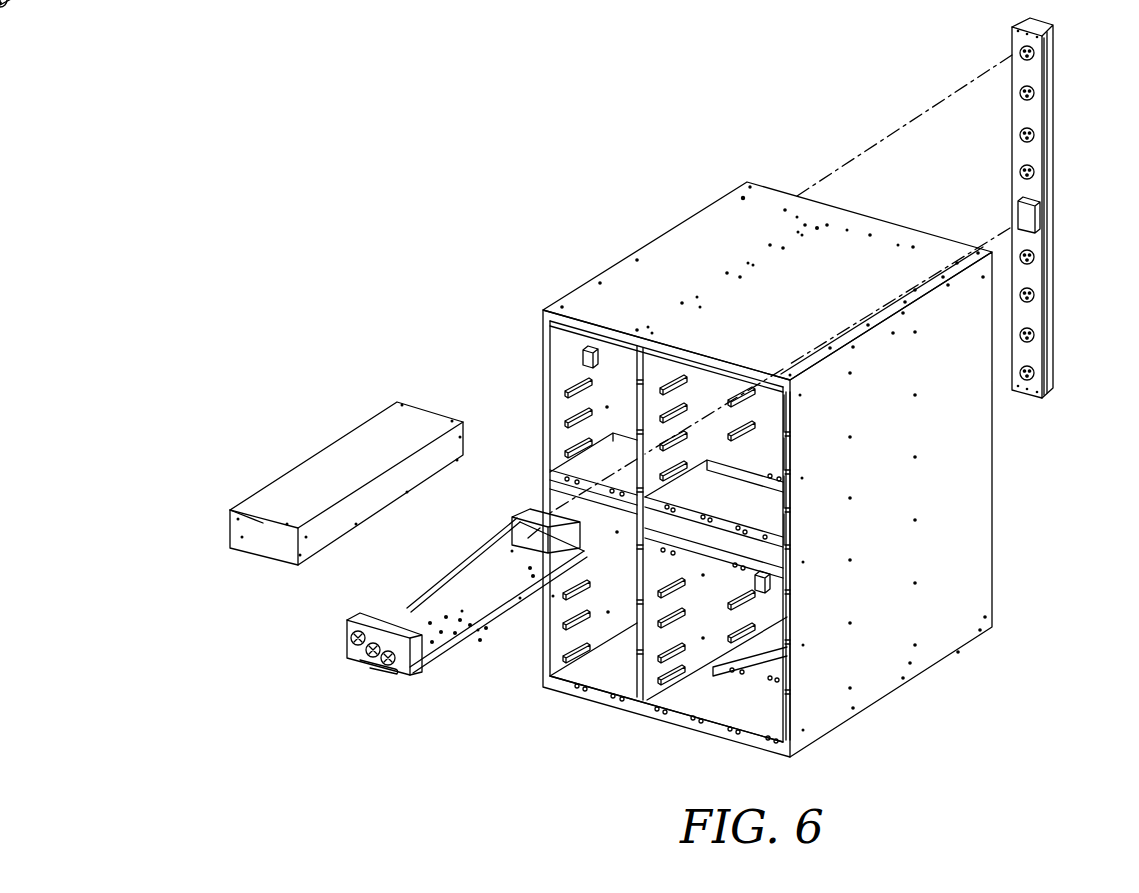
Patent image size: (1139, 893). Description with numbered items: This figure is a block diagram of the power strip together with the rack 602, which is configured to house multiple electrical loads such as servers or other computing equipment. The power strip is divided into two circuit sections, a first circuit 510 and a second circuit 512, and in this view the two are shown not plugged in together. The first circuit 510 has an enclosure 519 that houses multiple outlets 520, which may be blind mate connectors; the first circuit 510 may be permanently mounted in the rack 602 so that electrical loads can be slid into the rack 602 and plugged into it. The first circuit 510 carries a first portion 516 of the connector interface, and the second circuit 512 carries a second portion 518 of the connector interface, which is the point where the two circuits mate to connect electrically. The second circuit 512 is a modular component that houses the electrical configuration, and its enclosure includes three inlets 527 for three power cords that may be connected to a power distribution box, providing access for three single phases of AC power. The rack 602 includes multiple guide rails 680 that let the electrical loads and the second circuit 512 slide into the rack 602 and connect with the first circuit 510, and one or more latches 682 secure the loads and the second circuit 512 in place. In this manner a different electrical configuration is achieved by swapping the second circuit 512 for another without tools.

The first circuit 510 is at (1052, 46).
The second circuit 512 is at (499, 591).
The first portion of the connector interface 516 is at (1018, 218).
The second portion of the connector interface 518 is at (525, 520).
The enclosure 519 is at (1046, 98).
The outlets 520 is at (1019, 54).
The inlets 527 is at (357, 645).
The rack 602 is at (657, 243).
The guide rails 680 is at (565, 387).
The latches 682 is at (790, 412).